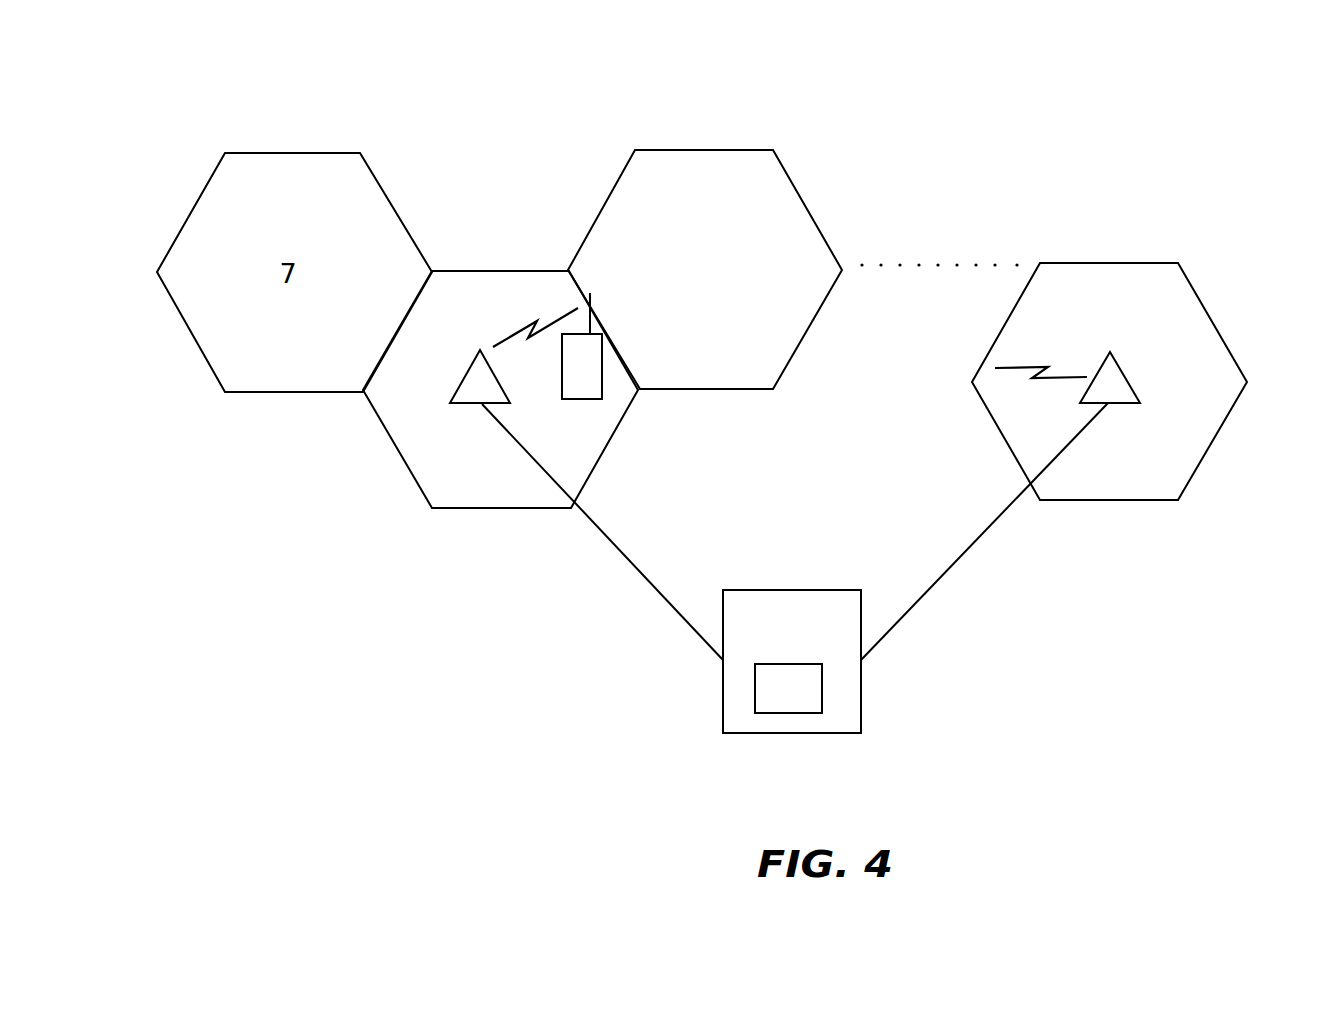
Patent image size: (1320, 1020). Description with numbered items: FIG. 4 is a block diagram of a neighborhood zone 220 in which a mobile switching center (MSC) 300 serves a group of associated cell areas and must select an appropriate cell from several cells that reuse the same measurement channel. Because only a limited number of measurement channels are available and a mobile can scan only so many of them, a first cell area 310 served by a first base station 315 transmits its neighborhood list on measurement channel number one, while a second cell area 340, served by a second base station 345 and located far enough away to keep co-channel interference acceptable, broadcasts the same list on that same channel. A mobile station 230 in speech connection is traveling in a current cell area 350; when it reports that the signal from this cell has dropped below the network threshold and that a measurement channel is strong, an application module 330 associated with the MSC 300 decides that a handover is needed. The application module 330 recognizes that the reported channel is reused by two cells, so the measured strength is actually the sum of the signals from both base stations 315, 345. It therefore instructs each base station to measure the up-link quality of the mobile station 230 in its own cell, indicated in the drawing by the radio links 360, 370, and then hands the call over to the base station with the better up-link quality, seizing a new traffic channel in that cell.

The neighborhood zone 220 is at (1108, 90).
The first cell area 310 is at (496, 269).
The cell area 350 is at (715, 155).
The second cell area 340 is at (1128, 258).
The first base station 315 is at (469, 404).
The second base station 345 is at (1140, 390).
The mobile station 230 is at (592, 402).
The radio link between mobile station and base station 360 is at (533, 343).
The radio transmission from second base station 370 is at (1053, 380).
The mobile switching center 300 is at (777, 590).
The application module 330 is at (822, 693).